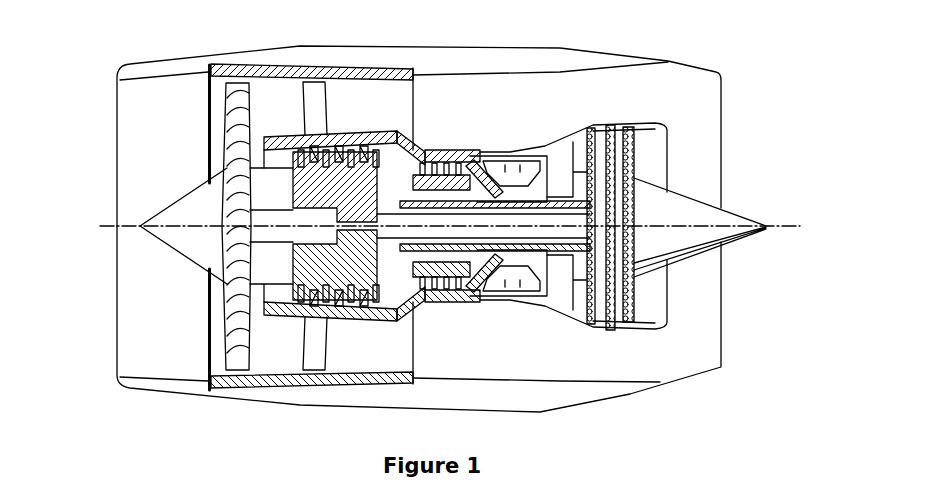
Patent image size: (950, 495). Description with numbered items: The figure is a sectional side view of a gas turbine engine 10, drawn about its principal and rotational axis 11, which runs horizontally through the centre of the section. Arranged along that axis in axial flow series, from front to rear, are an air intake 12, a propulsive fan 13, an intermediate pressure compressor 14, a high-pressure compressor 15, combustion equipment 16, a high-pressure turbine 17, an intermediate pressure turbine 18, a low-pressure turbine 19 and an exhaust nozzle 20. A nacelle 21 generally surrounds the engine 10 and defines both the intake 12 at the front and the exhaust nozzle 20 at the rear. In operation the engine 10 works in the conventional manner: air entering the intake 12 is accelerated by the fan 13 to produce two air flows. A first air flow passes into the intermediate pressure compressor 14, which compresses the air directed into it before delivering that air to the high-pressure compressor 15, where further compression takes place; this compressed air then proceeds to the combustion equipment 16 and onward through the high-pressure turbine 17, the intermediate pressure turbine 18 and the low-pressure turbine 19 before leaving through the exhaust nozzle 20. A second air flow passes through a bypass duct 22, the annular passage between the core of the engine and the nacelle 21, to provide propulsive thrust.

The gas turbine engine 10 is at (108, 100).
The principal and rotational axis 11 is at (108, 227).
The air intake 12 is at (188, 72).
The propulsive fan 13 is at (232, 340).
The intermediate pressure compressor 14 is at (312, 287).
The high-pressure compressor 15 is at (434, 176).
The combustion equipment 16 is at (502, 278).
The high-pressure turbine 17 is at (533, 280).
The intermediate pressure turbine 18 is at (577, 167).
The low-pressure turbine 19 is at (595, 300).
The exhaust nozzle 20 is at (720, 350).
The nacelle 21 is at (470, 65).
The bypass duct 22 is at (386, 116).